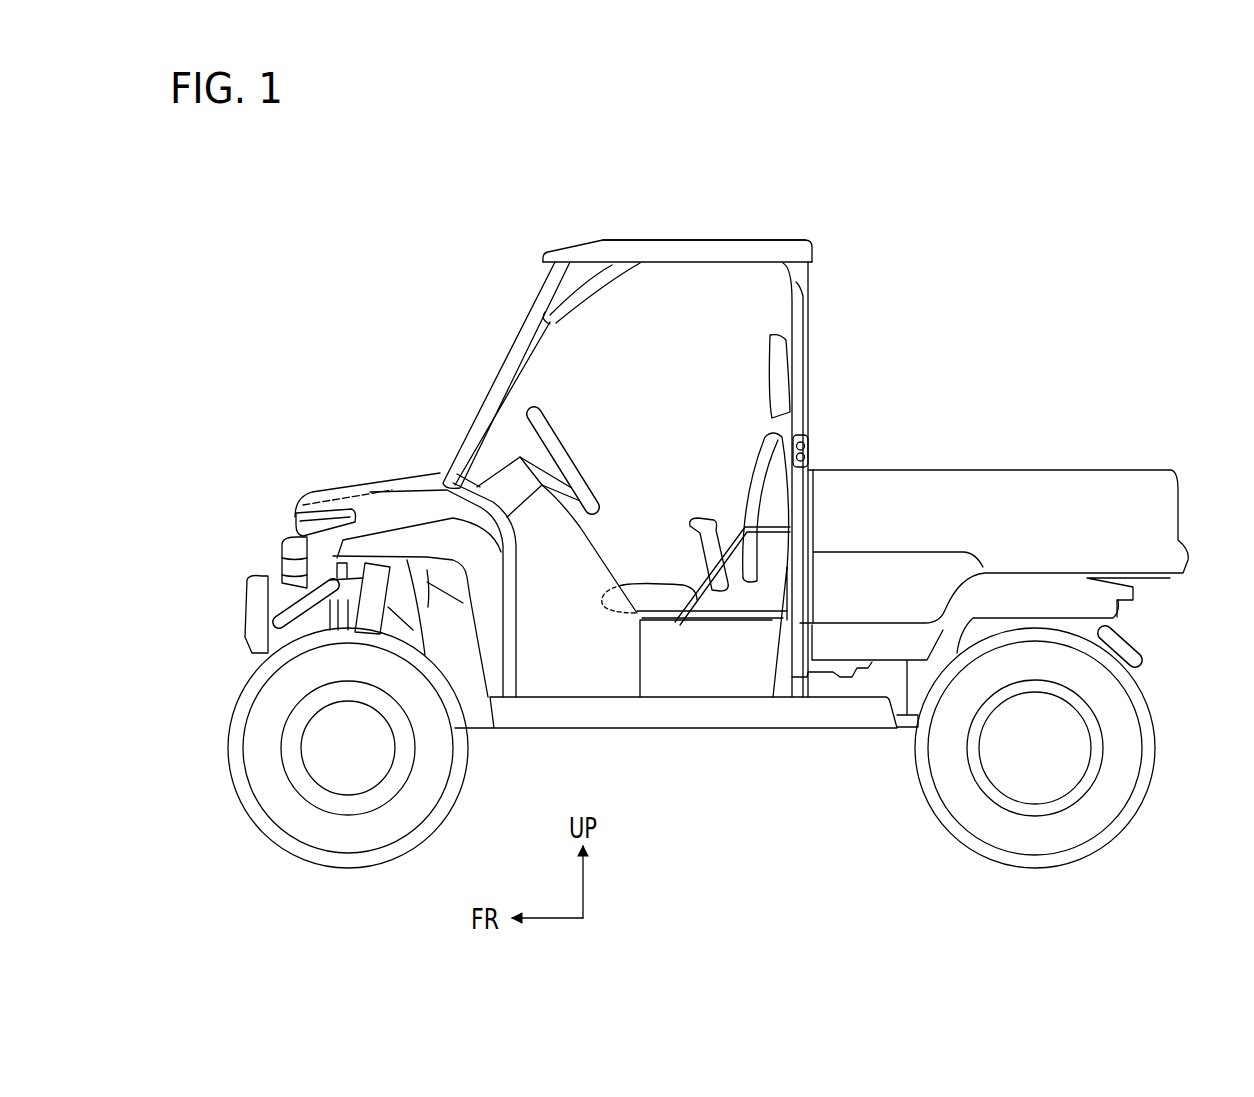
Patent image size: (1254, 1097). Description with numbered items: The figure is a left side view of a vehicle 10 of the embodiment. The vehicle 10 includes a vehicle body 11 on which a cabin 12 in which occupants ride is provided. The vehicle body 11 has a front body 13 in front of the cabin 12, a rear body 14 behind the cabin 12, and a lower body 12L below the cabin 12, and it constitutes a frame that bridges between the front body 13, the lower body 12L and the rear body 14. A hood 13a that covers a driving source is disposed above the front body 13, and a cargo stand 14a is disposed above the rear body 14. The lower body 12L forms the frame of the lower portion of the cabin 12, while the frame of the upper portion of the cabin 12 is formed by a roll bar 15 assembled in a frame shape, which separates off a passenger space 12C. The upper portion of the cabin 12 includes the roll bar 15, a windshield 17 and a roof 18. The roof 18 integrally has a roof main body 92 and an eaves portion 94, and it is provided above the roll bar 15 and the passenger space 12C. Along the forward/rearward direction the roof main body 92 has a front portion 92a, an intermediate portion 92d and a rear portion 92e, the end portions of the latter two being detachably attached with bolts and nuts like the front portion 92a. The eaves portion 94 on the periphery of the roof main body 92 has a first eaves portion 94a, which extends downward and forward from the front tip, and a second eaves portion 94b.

The vehicle 10 is at (432, 283).
The vehicle body 11 is at (405, 470).
The cabin 12 is at (645, 280).
The passenger space 12C is at (668, 376).
The lower body 12L is at (717, 732).
The front body 13 is at (290, 525).
The hood 13a is at (322, 492).
The rear body 14 is at (1183, 512).
The cargo stand 14a is at (1048, 472).
The roll bar 15 is at (812, 372).
The windshield 17 is at (487, 392).
The roof 18 is at (750, 238).
The roof main body 92 is at (713, 240).
The front portion 92a is at (576, 240).
The intermediate portion 92d is at (671, 240).
The rear portion 92e is at (798, 243).
The eaves portion 94 is at (633, 209).
The first eaves portion 94a is at (540, 262).
The second eaves portion 94b is at (700, 240).